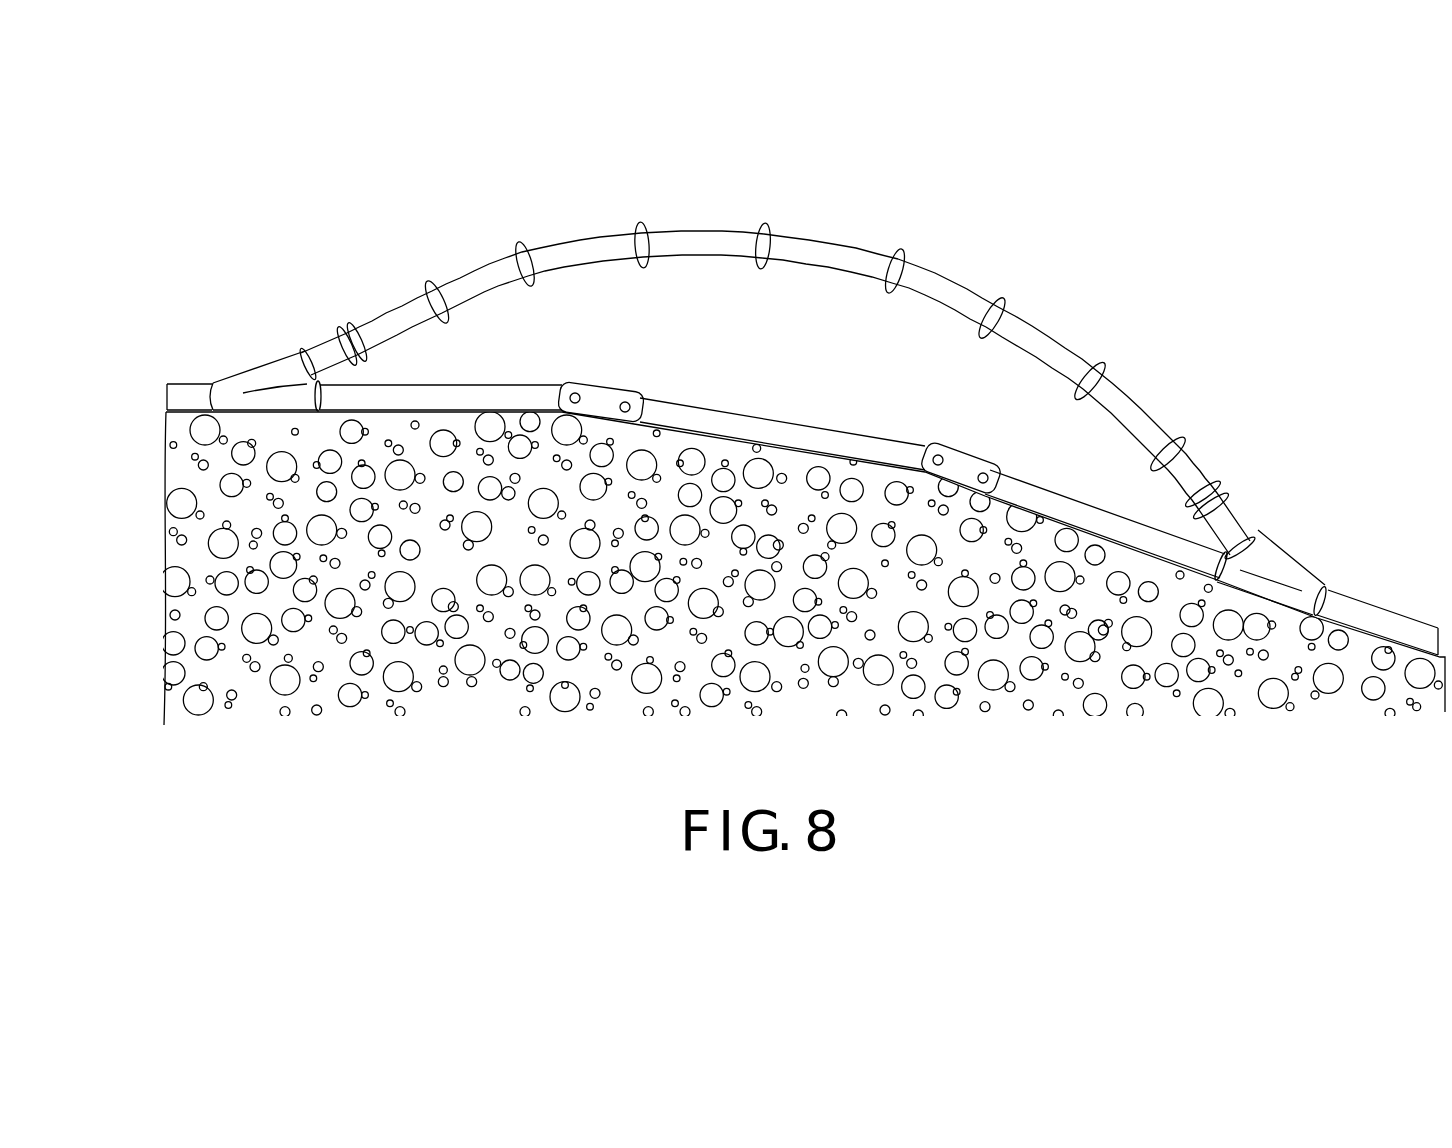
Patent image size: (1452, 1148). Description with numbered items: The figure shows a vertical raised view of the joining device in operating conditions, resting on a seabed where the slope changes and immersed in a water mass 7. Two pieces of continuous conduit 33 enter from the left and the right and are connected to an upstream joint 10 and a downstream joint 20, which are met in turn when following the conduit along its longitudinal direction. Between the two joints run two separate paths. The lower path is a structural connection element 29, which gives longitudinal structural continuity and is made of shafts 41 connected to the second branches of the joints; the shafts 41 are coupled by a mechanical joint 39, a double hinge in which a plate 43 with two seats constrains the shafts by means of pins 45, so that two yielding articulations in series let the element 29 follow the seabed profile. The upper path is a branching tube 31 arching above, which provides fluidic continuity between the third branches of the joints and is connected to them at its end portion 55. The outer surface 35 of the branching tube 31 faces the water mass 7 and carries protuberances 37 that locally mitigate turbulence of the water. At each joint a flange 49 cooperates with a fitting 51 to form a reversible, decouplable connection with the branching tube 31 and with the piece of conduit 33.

The water mass 7 is at (851, 363).
The upstream joint 10 is at (259, 342).
The downstream joint 20 is at (1323, 563).
The structural connection element 29 is at (725, 413).
The branching tube 31 is at (980, 297).
The piece of continuous conduit 33 is at (189, 393).
The outer surface 35 is at (793, 237).
The protuberance 37 is at (762, 229).
The mechanical joint 39 is at (579, 360).
The shaft 41 is at (500, 393).
The plate 43 is at (600, 397).
The pin 45 is at (627, 406).
The flange 49 is at (355, 313).
The fitting 51 is at (325, 350).
The end portion 55 is at (408, 315).